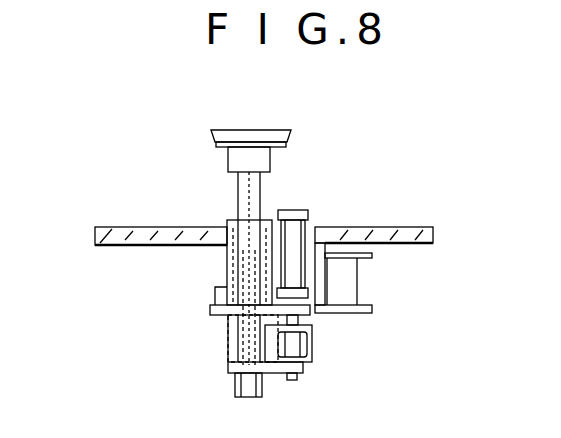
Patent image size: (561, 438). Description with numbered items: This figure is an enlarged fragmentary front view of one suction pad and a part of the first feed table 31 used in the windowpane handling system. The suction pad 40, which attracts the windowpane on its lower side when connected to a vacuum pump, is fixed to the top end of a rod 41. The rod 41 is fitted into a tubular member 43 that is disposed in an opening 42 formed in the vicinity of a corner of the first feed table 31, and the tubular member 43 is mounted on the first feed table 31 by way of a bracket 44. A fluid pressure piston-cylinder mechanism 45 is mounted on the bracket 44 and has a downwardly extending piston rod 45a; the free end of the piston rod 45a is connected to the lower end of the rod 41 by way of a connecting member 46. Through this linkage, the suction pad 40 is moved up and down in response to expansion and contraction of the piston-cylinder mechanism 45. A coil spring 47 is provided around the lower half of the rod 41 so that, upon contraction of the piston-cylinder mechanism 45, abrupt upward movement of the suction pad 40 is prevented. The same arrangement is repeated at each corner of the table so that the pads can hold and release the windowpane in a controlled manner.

The first feed table 31 is at (130, 227).
The suction pad 40 is at (277, 129).
The rod 41 is at (252, 191).
The opening 42 is at (310, 221).
The tubular member 43 is at (226, 256).
The bracket 44 is at (362, 312).
The fluid pressure piston-cylinder mechanism 45 is at (300, 271).
The piston rod 45a is at (298, 322).
The connecting member 46 is at (276, 374).
The coil spring 47 is at (232, 327).